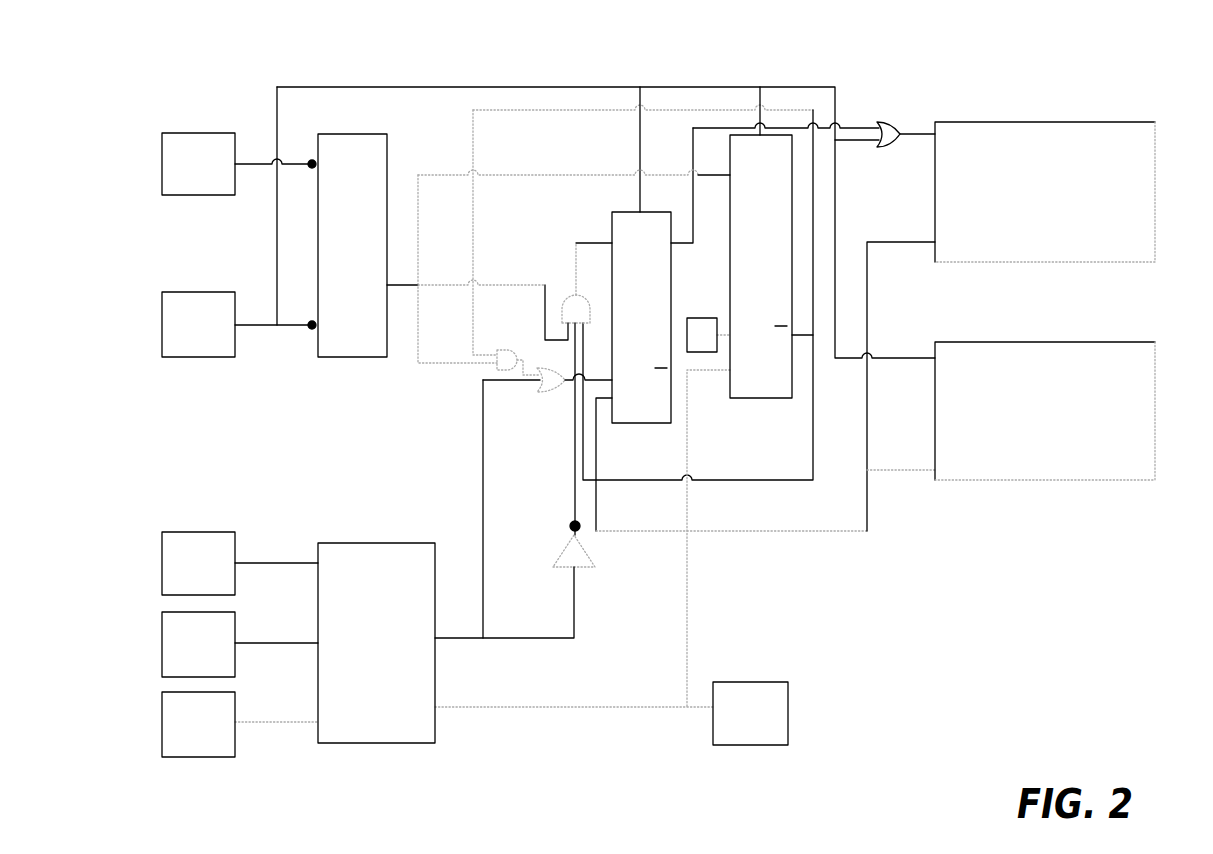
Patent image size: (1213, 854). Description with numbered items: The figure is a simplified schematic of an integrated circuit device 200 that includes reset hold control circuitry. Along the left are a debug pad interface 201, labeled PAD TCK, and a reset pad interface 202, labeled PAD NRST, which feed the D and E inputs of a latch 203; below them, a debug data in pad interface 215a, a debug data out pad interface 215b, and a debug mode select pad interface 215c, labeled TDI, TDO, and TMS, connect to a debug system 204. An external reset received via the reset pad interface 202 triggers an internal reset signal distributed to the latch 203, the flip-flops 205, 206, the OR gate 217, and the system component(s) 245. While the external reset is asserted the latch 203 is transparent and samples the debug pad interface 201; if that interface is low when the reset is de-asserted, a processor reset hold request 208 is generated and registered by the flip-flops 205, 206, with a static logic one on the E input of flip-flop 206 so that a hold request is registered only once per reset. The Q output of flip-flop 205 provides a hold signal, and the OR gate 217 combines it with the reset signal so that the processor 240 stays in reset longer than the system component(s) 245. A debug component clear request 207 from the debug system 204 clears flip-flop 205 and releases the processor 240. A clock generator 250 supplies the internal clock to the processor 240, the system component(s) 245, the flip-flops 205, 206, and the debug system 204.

The integrated circuit device 200 is at (133, 62).
The debug pad interface 201 is at (162, 156).
The reset pad interface 202 is at (162, 321).
The latch 203 is at (355, 357).
The debug system 204 is at (378, 743).
The flip-flop 205 is at (612, 226).
The flip-flop 206 is at (740, 398).
The debug component clear request 207 is at (517, 638).
The processor reset hold request 208 is at (492, 285).
The debug data in pad interface 215a is at (162, 566).
The debug data out pad interface 215b is at (162, 650).
The debug mode select pad interface 215c is at (162, 726).
The OR gate 217 is at (888, 126).
The processor 240 is at (1090, 122).
The system component(s) 245 is at (1107, 342).
The clock generator 250 is at (762, 682).